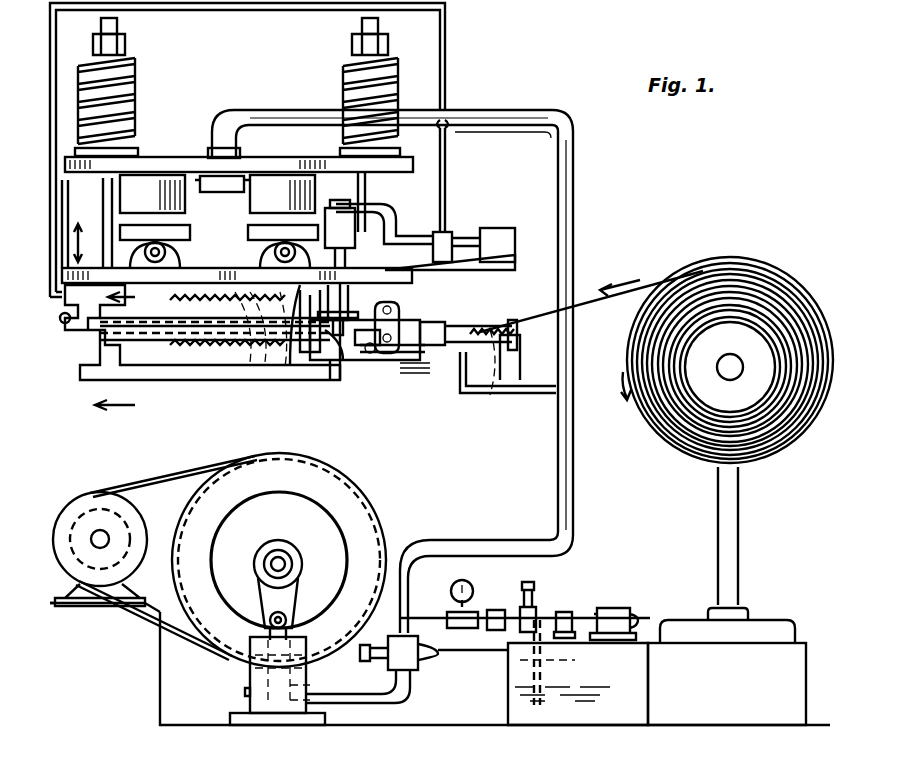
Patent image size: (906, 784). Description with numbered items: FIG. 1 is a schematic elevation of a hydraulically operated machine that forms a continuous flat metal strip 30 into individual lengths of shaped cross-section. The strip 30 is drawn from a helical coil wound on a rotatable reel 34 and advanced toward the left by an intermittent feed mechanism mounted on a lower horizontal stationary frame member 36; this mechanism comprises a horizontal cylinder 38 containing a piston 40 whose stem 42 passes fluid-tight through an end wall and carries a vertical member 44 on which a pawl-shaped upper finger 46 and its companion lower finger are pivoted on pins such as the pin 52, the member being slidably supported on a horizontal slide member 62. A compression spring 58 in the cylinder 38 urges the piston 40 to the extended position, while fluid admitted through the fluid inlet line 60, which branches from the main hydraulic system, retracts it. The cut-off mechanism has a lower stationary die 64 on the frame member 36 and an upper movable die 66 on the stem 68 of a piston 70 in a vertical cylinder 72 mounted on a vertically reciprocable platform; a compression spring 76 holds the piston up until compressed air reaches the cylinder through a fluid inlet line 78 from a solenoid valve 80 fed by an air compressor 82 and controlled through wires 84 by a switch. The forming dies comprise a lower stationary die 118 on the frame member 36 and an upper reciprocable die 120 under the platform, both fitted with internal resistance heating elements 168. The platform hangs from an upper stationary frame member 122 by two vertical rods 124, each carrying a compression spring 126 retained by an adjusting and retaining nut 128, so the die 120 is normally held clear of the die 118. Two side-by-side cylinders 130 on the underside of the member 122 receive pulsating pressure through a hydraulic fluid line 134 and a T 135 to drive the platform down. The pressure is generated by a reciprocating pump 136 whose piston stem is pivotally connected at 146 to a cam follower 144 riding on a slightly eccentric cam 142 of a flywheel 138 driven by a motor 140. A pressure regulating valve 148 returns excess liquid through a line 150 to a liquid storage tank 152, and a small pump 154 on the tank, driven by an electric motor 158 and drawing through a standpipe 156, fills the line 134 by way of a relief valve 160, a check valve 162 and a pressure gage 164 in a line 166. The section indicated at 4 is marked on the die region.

The section line / direction arrows 4 is at (124, 353).
The strip 30 is at (655, 266).
The reel 34 is at (752, 400).
The lower horizontal stationary frame member 36 is at (282, 375).
The cylinder 38 is at (513, 362).
The piston 40 is at (510, 320).
The stem 42 is at (470, 324).
The member 44 is at (410, 302).
The upper finger 46 is at (418, 322).
The pin 52 is at (419, 375).
The compression spring 58 is at (508, 388).
The fluid inlet line 60 is at (538, 396).
The horizontal slide member 62 is at (415, 375).
The lower stationary die 64 is at (402, 380).
The upper movable die 66 is at (352, 365).
The stem 68 is at (340, 292).
The piston 70 is at (360, 195).
The vertical cylinder 72 is at (270, 250).
The compression spring 76 is at (310, 292).
The fluid inlet line 78 is at (410, 230).
The solenoid valve 80 is at (452, 228).
The air compressor 82 is at (495, 230).
The wires 84 is at (448, 188).
The lower stationary die 118 is at (203, 375).
The upper reciprocable die 120 is at (335, 375).
The upper stationary frame member 122 is at (162, 156).
The vertical rod 124 is at (453, 148).
The compression spring 126 is at (123, 92).
The adjusting and retaining nut 128 is at (120, 58).
The cylinder 130 is at (186, 210).
The hydraulic fluid line 134 is at (288, 109).
The T 135 is at (243, 170).
The reciprocating pump 136 is at (246, 675).
The flywheel 138 is at (365, 484).
The motor 140 is at (96, 490).
The eccentric cam 142 is at (286, 541).
The cam follower 144 is at (235, 560).
The pivotal connection 146 is at (240, 610).
The pressure regulating valve 148 is at (425, 690).
The line 150 is at (460, 665).
The liquid storage tank 152 is at (522, 710).
The pump 154 is at (597, 608).
The standpipe 156 is at (569, 657).
The electric motor 158 is at (636, 608).
The relief valve 160 is at (550, 604).
The check valve 162 is at (488, 655).
The pressure gage 164 is at (480, 594).
The line 166 is at (428, 608).
The heating elements 168 is at (247, 385).